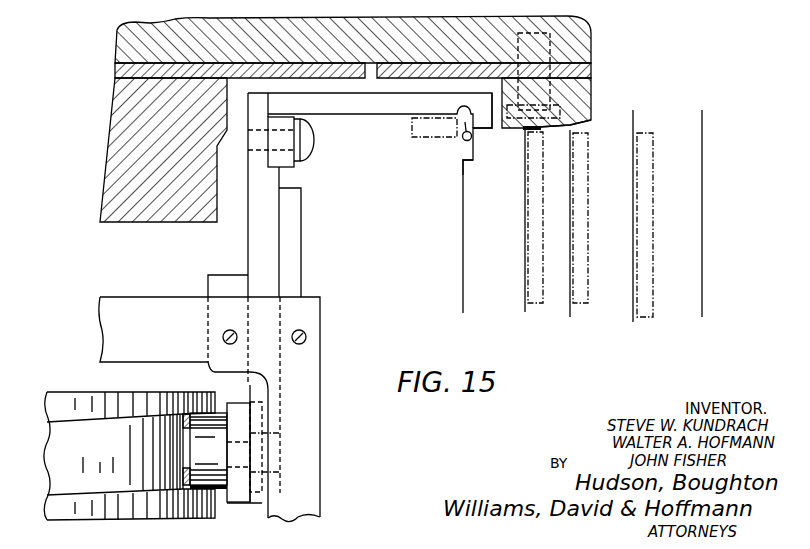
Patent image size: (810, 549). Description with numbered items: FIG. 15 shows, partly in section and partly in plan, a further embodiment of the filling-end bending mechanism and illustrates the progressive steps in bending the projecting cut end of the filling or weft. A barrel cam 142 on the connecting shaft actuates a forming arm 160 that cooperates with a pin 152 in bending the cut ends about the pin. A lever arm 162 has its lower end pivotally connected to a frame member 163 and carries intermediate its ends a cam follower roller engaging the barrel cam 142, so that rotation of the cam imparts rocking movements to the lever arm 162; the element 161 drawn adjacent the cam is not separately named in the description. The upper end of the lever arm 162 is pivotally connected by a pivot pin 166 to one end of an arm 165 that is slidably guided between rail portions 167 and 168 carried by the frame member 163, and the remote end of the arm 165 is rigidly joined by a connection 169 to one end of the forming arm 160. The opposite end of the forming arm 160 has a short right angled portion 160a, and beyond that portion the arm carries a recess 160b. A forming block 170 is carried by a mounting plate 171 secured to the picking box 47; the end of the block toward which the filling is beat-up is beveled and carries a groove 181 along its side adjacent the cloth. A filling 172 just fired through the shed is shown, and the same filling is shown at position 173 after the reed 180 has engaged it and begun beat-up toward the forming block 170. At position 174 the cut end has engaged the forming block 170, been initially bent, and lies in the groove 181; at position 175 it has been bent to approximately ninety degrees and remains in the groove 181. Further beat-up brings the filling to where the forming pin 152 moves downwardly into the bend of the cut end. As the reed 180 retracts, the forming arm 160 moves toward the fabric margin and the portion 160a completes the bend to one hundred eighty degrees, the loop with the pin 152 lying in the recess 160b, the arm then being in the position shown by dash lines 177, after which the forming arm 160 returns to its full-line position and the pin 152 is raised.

The picking box 47 is at (591, 40).
The mounting plate 171 is at (591, 70).
The forming block 170 is at (591, 97).
The groove 181 is at (592, 121).
The arm 165 is at (248, 250).
The recess 160b is at (466, 112).
The forming arm 160 is at (412, 128).
The connection 169 is at (316, 146).
The pin 152 is at (462, 140).
The short right angled portion 160a is at (487, 123).
The dash lines 177 is at (480, 160).
The rail portion 168 is at (302, 265).
The rail portion 167 is at (207, 285).
The frame member 163 is at (321, 358).
The pivot pin 166 is at (258, 452).
The lever arm 162 is at (232, 503).
The nut 161 is at (203, 430).
The barrel cam 142 is at (126, 455).
The filling position 175 is at (525, 287).
The filling position 174 is at (570, 312).
The filling position 173 is at (636, 318).
The reed 180 is at (540, 223).
The filling 172 is at (703, 303).